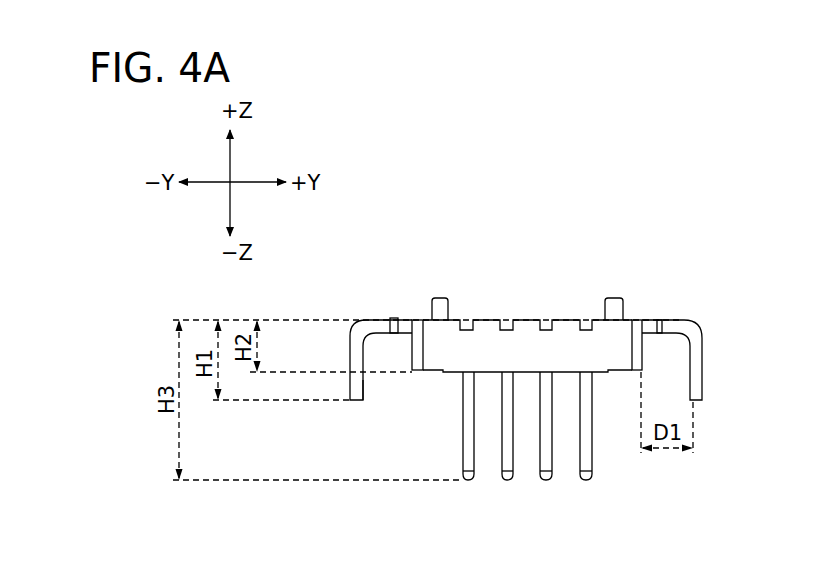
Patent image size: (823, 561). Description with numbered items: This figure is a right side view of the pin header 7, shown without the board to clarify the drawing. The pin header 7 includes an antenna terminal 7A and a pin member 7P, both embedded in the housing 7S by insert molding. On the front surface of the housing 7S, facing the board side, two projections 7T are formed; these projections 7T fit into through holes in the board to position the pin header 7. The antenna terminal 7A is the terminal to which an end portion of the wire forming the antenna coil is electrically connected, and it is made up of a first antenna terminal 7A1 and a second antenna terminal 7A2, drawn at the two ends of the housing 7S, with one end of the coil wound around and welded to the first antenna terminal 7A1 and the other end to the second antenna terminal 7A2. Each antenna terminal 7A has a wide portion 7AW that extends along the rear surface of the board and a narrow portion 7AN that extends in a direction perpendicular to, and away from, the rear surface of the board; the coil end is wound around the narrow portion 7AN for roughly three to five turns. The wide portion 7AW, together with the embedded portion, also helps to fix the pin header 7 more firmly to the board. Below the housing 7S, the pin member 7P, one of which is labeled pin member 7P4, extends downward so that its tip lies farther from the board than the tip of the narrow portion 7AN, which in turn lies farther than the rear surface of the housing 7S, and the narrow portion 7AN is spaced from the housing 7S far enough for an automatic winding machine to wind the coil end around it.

The pin header 7 is at (668, 240).
The housing 7S is at (562, 338).
The projection 7T is at (438, 297).
The antenna terminal 7A is at (581, 342).
The first antenna terminal 7A1 is at (693, 323).
The second antenna terminal 7A2 is at (357, 402).
The wide portion 7AW is at (398, 318).
The narrow portion 7AN is at (363, 391).
The pin member 7P is at (527, 459).
The pin member 7P4 is at (473, 462).